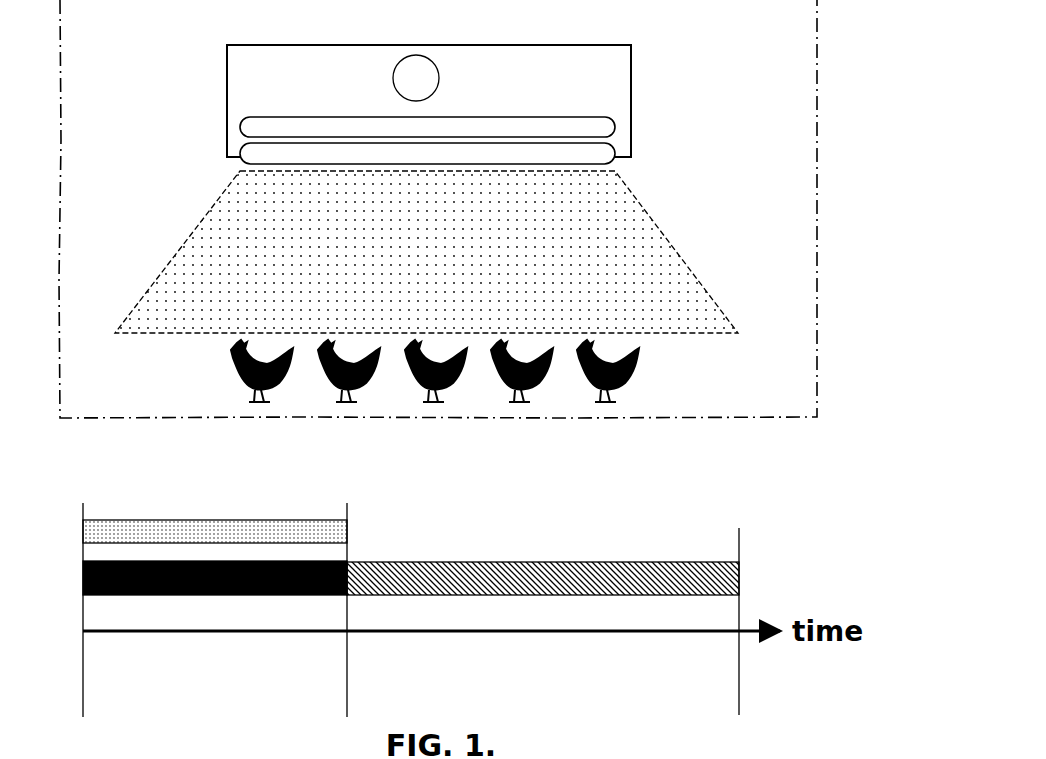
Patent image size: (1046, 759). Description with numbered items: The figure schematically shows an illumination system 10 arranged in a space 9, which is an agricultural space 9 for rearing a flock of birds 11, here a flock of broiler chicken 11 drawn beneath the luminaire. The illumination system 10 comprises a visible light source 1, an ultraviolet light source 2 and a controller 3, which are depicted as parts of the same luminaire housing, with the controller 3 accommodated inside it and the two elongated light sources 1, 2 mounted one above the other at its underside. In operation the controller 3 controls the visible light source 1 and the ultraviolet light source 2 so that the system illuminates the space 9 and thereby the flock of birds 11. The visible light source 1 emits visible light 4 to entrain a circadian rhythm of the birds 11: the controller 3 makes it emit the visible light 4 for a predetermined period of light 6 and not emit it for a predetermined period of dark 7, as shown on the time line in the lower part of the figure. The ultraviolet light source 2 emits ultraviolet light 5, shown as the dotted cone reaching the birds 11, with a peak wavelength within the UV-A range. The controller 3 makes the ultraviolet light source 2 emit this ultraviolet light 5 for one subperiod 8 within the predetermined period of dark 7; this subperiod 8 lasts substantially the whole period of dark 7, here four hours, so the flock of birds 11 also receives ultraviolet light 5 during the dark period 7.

The visible light source 1 is at (240, 127).
The ultraviolet light source 2 is at (240, 165).
The controller 3 is at (393, 70).
The visible light 4 is at (546, 561).
The ultraviolet light 5 is at (173, 273).
The predetermined period of light 6 is at (347, 655).
The predetermined period of dark 7 is at (83, 655).
The subperiod 8 is at (345, 503).
The space 9 is at (790, 182).
The illumination system 10 is at (655, 56).
The flock of birds 11 is at (656, 364).